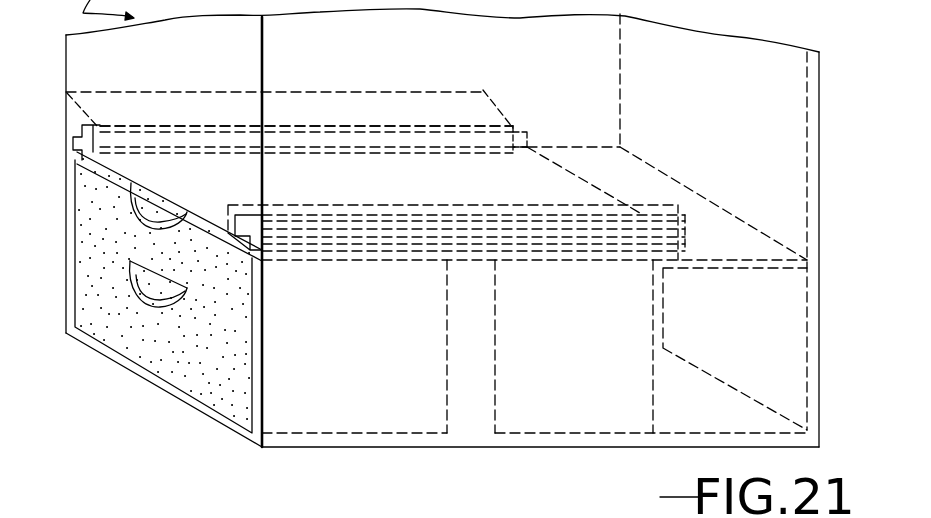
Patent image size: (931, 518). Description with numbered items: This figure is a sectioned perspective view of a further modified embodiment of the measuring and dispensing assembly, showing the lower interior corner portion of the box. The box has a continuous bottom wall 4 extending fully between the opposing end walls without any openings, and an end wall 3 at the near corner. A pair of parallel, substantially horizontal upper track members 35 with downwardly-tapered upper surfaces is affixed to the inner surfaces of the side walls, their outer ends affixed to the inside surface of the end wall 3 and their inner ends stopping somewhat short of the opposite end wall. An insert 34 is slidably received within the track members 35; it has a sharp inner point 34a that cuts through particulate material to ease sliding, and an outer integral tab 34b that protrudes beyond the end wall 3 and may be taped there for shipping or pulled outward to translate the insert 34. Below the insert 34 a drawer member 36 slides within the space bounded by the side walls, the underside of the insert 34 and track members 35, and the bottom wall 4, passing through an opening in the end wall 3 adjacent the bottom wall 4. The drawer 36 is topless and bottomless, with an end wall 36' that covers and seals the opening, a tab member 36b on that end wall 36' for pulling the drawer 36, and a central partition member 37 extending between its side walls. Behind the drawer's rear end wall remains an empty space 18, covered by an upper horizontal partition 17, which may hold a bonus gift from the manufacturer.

The end wall 3 is at (87, 63).
The bottom wall 4 is at (492, 449).
The upper horizontal partition 17 is at (653, 182).
The empty space 18 is at (772, 360).
The insert 34 is at (103, 163).
The sharp inner point 34a is at (681, 238).
The integral tab 34b is at (147, 207).
The upper track members 35 is at (422, 108).
The drawer member 36 is at (145, 296).
The end wall 36' is at (164, 303).
The tab member 36b is at (147, 278).
The central partition member 37 is at (478, 398).